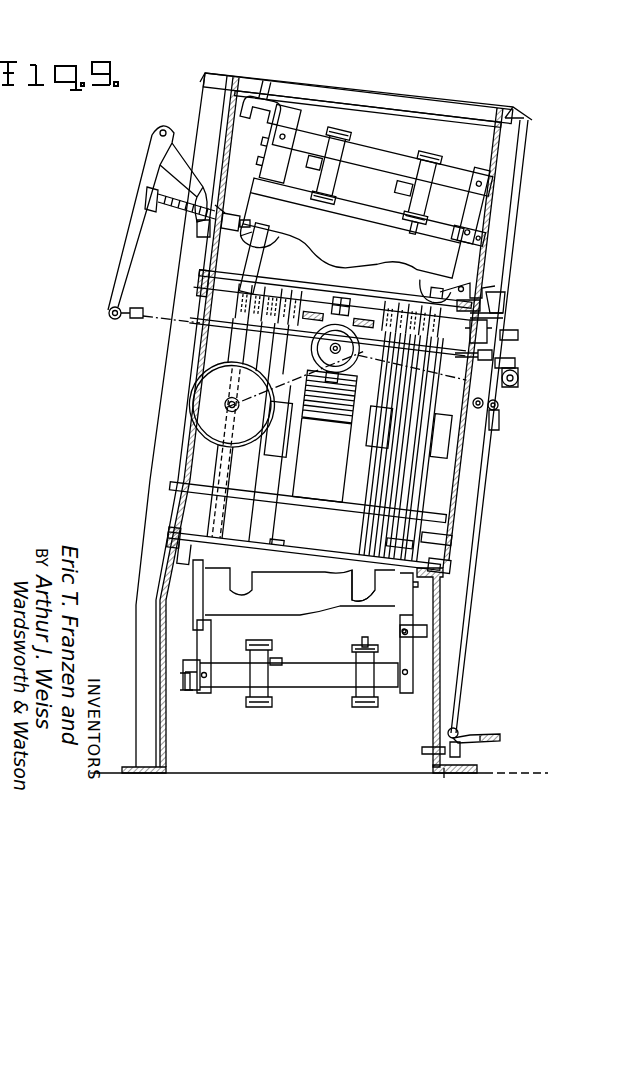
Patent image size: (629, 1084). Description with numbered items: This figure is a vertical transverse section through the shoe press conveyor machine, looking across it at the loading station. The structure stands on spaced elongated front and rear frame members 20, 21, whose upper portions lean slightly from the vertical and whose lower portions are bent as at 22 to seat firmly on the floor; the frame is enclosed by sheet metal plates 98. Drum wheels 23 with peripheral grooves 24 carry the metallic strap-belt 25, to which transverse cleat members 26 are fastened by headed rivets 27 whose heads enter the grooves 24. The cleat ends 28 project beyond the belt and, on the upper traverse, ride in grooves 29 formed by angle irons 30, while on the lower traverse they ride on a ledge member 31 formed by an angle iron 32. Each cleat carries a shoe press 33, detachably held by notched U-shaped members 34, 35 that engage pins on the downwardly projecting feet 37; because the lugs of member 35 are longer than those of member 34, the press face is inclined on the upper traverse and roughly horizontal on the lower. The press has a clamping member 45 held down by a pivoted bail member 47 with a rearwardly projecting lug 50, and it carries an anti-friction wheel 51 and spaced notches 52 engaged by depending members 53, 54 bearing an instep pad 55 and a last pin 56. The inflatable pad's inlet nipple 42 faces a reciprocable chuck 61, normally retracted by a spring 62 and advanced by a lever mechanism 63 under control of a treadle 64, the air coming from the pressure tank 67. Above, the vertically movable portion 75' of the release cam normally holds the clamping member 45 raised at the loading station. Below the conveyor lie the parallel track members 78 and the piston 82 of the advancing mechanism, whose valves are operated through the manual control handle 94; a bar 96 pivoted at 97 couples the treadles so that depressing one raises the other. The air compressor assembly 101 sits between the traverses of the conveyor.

The front frame member 20 is at (507, 240).
The rear frame member 21 is at (162, 460).
The bent lower portion 22 is at (147, 620).
The drum wheels 23 is at (217, 513).
The peripheral grooves 24 is at (393, 498).
The strap-belt 25 is at (413, 562).
The cleat members 26 is at (200, 555).
The headed rivets 27 is at (230, 530).
The cleat ends 28 is at (487, 287).
The grooves 29 is at (477, 313).
The angle irons 30 is at (477, 337).
The ledge member 31 is at (430, 563).
The angle iron 32 is at (443, 578).
The shoe press 33 is at (342, 240).
The notched U-shaped member 34 is at (457, 287).
The notched U-shaped member 35 is at (260, 272).
The downwardly projecting feet 37 is at (285, 240).
The inlet nipple 42 is at (247, 220).
The clamping member 45 is at (382, 125).
The bail member 47 is at (485, 172).
The rearwardly projecting lug 50 is at (487, 237).
The anti-friction wheel 51 is at (287, 126).
The spaced notches 52 is at (318, 168).
The depending member 53 is at (345, 125).
The depending member 54 is at (435, 172).
The instep pad 55 is at (253, 638).
The last pin 56 is at (415, 208).
The reciprocable chuck 61 is at (247, 227).
The spring 62 is at (185, 212).
The lever mechanism 63 is at (122, 268).
The treadle 64 is at (467, 647).
The pressure tank 67 is at (200, 398).
The vertically movable portion 75' is at (263, 82).
The track members 78 is at (378, 298).
The piston 82 is at (330, 348).
The manual control handle 94 is at (477, 298).
The bar 96 is at (473, 757).
The pivot 97 is at (446, 776).
The sheet metal plates 98 is at (447, 92).
The air compressor assembly 101 is at (298, 471).